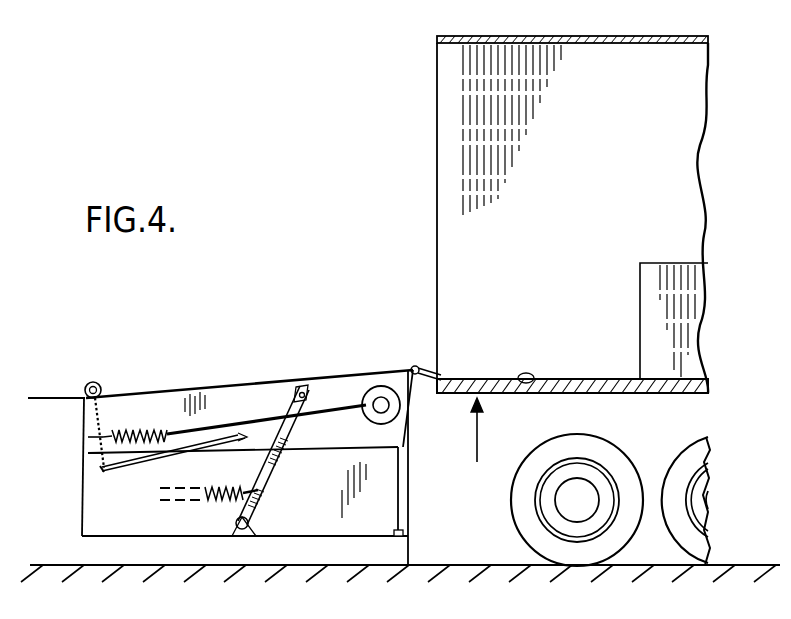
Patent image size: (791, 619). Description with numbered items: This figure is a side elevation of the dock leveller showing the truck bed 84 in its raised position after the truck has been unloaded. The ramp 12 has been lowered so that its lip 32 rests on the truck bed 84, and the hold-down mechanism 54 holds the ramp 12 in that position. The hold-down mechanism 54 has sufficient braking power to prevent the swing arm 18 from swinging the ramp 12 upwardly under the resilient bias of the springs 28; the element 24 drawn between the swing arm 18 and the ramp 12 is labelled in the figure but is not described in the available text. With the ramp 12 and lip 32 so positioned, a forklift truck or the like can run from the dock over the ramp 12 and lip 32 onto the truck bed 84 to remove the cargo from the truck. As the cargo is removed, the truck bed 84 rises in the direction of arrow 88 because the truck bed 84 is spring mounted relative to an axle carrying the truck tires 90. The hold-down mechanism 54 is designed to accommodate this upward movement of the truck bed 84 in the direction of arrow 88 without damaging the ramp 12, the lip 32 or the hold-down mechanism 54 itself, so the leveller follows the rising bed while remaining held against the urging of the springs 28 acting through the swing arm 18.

The ramp 12 is at (258, 365).
The swing arm 18 is at (270, 455).
The spring-loaded bar 24 is at (304, 383).
The springs 28 is at (205, 500).
The lip 32 is at (452, 368).
The hold-down mechanism 54 is at (374, 368).
The truck bed 84 is at (527, 380).
The arrow 88 is at (475, 444).
The truck tires 90 is at (608, 452).